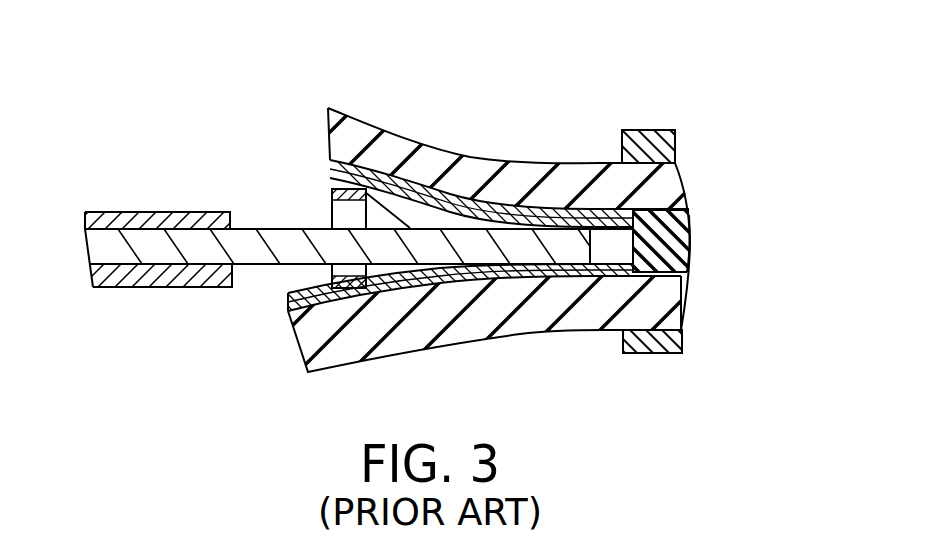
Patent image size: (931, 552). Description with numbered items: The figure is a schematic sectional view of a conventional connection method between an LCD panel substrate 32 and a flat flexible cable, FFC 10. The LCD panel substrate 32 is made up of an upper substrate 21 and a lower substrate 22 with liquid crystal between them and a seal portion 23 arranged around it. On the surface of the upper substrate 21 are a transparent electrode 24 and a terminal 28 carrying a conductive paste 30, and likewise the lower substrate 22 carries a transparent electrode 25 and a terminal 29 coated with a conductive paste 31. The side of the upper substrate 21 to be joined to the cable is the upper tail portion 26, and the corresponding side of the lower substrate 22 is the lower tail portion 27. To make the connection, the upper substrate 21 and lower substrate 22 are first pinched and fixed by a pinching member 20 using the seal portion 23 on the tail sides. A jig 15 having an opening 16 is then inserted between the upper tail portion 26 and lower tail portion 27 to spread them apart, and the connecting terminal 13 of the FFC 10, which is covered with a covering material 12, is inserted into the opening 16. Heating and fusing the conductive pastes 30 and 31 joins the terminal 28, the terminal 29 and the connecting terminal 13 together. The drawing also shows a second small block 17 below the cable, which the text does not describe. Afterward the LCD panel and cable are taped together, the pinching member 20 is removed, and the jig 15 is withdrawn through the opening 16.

The FFC 10 is at (316, 235).
The covering material 12 is at (140, 212).
The connecting terminal 13 is at (197, 256).
The jig 15 is at (312, 210).
The opening 16 is at (328, 218).
The lower clamp block 17 is at (332, 278).
The pinching member 20 is at (652, 130).
The upper substrate 21 is at (704, 180).
The lower substrate 22 is at (700, 303).
The seal portion 23 is at (689, 238).
The transparent electrode 24 is at (686, 208).
The transparent electrode 25 is at (689, 312).
The upper tail portion 26 is at (512, 176).
The lower tail portion 27 is at (526, 318).
The terminal 28 is at (454, 192).
The terminal 29 is at (434, 292).
The conductive paste 30 is at (368, 186).
The conductive paste 31 is at (375, 290).
The LCD panel substrate 32 is at (715, 235).